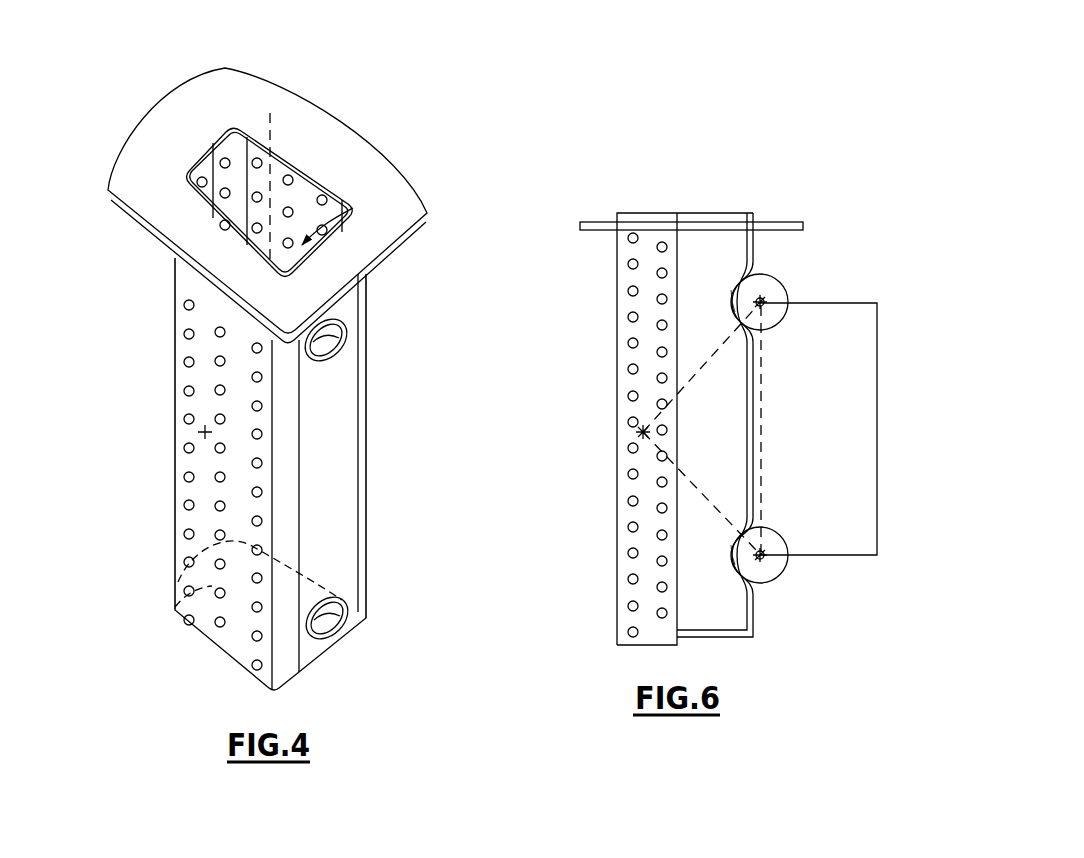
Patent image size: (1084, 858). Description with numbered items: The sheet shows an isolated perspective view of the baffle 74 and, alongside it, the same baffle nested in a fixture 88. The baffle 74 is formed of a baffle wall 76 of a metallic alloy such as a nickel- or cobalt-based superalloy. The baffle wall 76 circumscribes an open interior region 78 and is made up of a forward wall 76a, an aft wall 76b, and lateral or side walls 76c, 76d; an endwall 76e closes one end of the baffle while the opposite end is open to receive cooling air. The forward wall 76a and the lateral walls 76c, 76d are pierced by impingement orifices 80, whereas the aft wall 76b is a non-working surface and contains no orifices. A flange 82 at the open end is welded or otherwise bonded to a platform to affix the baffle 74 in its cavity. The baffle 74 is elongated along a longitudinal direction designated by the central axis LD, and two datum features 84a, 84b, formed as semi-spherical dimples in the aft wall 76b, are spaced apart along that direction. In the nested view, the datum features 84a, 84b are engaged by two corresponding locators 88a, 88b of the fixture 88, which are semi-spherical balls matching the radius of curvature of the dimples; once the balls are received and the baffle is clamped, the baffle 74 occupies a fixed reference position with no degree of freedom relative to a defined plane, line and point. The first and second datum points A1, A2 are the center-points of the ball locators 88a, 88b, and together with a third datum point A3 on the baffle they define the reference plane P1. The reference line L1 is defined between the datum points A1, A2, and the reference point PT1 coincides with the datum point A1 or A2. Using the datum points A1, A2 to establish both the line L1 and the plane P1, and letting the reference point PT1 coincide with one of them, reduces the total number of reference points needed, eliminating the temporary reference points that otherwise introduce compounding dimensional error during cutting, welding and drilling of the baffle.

In FIG. 4, the baffle 74 is at (264, 376).
In FIG. 6, the baffle 74 is at (745, 427).
In FIG. 4, the baffle wall 76 is at (192, 646).
In FIG. 4, the forward wall 76a is at (203, 160).
In FIG. 4, the aft wall 76b is at (322, 421).
In FIG. 6, the aft wall 76b is at (733, 430).
In FIG. 4, the lateral wall 76c is at (206, 381).
In FIG. 6, the lateral wall 76c is at (651, 407).
In FIG. 4, the lateral wall 76d is at (303, 197).
In FIG. 4, the endwall 76e is at (177, 613).
In FIG. 4, the open interior region 78 is at (353, 208).
In FIG. 4, the impingement orifices 80 is at (290, 180).
In FIG. 6, the impingement orifices 80 is at (627, 267).
In FIG. 4, the flange 82 is at (380, 230).
In FIG. 6, the flange 82 is at (780, 224).
In FIG. 4, the datum feature 84a is at (347, 318).
In FIG. 6, the datum feature 84a is at (742, 298).
In FIG. 4, the datum feature 84b is at (349, 599).
In FIG. 6, the datum feature 84b is at (742, 597).
In FIG. 6, the fixture 88 is at (846, 417).
In FIG. 6, the locator 88a is at (805, 292).
In FIG. 6, the locator 88b is at (800, 541).
In FIG. 6, the first datum point A1 is at (806, 292).
In FIG. 6, the second datum point A2 is at (772, 562).
In FIG. 6, the third datum point A3 is at (638, 436).
In FIG. 6, the reference point PT1 is at (770, 306).
In FIG. 6, the reference line L1 is at (763, 368).
In FIG. 6, the reference plane P1 is at (697, 368).
In FIG. 4, the central axis LD is at (272, 173).